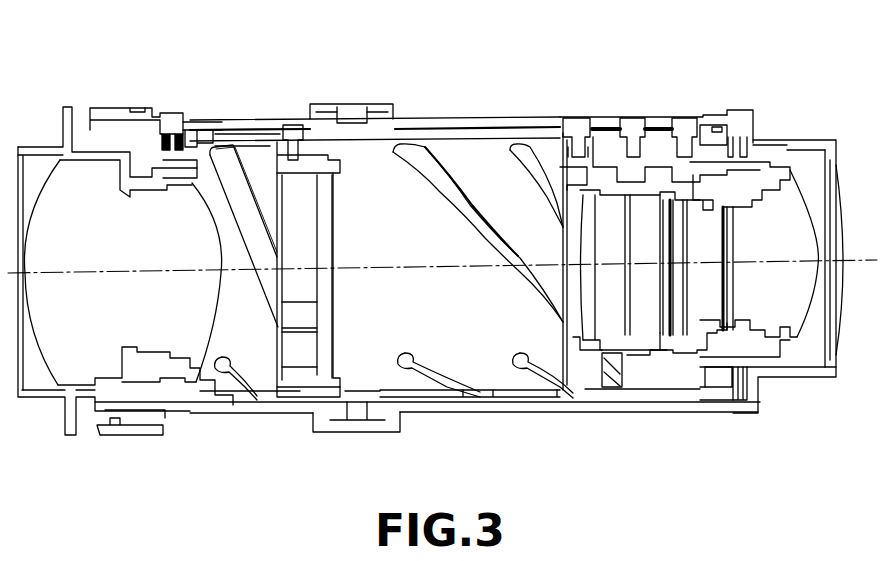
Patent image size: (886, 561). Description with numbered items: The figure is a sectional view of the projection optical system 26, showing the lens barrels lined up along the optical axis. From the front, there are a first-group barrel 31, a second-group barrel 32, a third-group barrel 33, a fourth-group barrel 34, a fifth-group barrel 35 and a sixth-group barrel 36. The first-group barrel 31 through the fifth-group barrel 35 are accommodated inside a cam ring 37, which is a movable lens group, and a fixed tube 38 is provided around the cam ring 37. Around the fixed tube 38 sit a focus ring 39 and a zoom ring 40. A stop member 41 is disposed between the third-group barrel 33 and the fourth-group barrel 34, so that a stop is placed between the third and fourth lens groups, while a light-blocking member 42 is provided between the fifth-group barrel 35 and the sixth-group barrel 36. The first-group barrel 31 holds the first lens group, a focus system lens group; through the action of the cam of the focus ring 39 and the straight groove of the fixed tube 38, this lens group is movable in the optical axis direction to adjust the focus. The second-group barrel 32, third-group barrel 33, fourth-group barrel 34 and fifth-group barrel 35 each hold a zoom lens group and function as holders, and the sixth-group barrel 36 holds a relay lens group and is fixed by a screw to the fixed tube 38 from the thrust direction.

The lens barrel unit 26 is at (452, 429).
The first-group barrel 31 is at (68, 140).
The second-group barrel 32 is at (313, 158).
The third-group barrel 33 is at (560, 123).
The fourth-group barrel 34 is at (632, 163).
The fifth-group barrel 35 is at (747, 158).
The sixth-group barrel 36 is at (828, 140).
The cam ring 37 is at (497, 140).
The fixed tube 38 is at (450, 122).
The focus ring 39 is at (143, 107).
The zoom ring 40 is at (235, 138).
The stop member 41 is at (690, 165).
The light-blocking member 42 is at (790, 170).